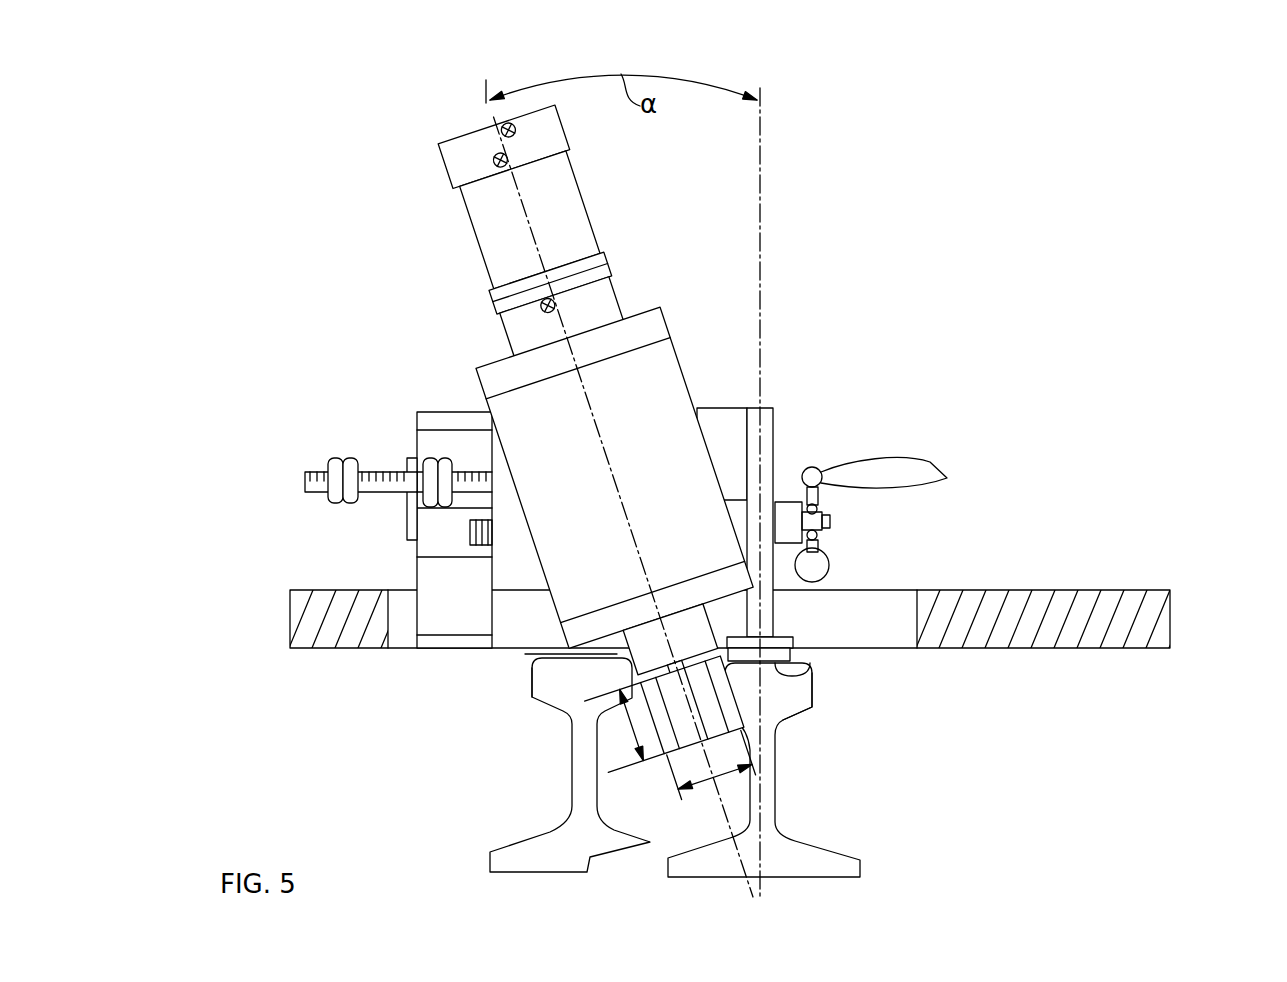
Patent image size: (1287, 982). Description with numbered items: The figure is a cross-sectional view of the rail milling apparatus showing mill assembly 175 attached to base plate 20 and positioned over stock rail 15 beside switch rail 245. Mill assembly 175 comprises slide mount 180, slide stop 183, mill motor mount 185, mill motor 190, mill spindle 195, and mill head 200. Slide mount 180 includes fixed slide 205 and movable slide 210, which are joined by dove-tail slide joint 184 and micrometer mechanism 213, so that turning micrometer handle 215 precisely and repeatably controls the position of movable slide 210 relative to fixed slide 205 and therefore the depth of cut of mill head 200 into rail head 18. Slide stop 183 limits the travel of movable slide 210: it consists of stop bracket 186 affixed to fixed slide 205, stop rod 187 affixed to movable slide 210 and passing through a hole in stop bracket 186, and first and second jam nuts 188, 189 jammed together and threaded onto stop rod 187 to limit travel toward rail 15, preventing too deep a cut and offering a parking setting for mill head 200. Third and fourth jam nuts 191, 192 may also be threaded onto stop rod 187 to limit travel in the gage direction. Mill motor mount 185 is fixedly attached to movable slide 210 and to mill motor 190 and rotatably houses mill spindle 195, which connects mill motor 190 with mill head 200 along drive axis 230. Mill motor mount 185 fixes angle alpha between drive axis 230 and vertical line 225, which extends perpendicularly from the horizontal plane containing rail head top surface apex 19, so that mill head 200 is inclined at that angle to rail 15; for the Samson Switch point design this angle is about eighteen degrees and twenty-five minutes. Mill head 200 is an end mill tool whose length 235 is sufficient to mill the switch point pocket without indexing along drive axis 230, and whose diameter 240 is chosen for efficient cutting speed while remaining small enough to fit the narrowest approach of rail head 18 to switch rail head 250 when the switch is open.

The stock rail 15 is at (863, 862).
The rail head 18 is at (813, 690).
The rail head top surface apex 19 is at (812, 673).
The base plate 20 is at (1173, 607).
The mill assembly 175 is at (600, 482).
The slide mount 180 is at (768, 407).
The slide stop 183 is at (395, 487).
The dove-tail slide joint 184 is at (433, 543).
The mill motor mount 185 is at (680, 350).
The stop bracket 186 is at (403, 458).
The stop rod 187 is at (305, 478).
The first jam nut 188 is at (330, 503).
The second jam nut 189 is at (342, 507).
The mill motor 190 is at (480, 252).
The third jam nut 191 is at (428, 462).
The fourth jam nut 192 is at (457, 468).
The mill spindle 195 is at (547, 653).
The mill head 200 is at (748, 755).
The fixed slide 205 is at (450, 410).
The movable slide 210 is at (712, 408).
The micrometer mechanism 213 is at (780, 500).
The micrometer handle 215 is at (930, 468).
The vertical line 225 is at (760, 152).
The drive axis 230 is at (487, 100).
The mill head length 235 is at (630, 733).
The mill head diameter 240 is at (710, 780).
The switch rail 245 is at (489, 855).
The switch rail head 250 is at (531, 690).